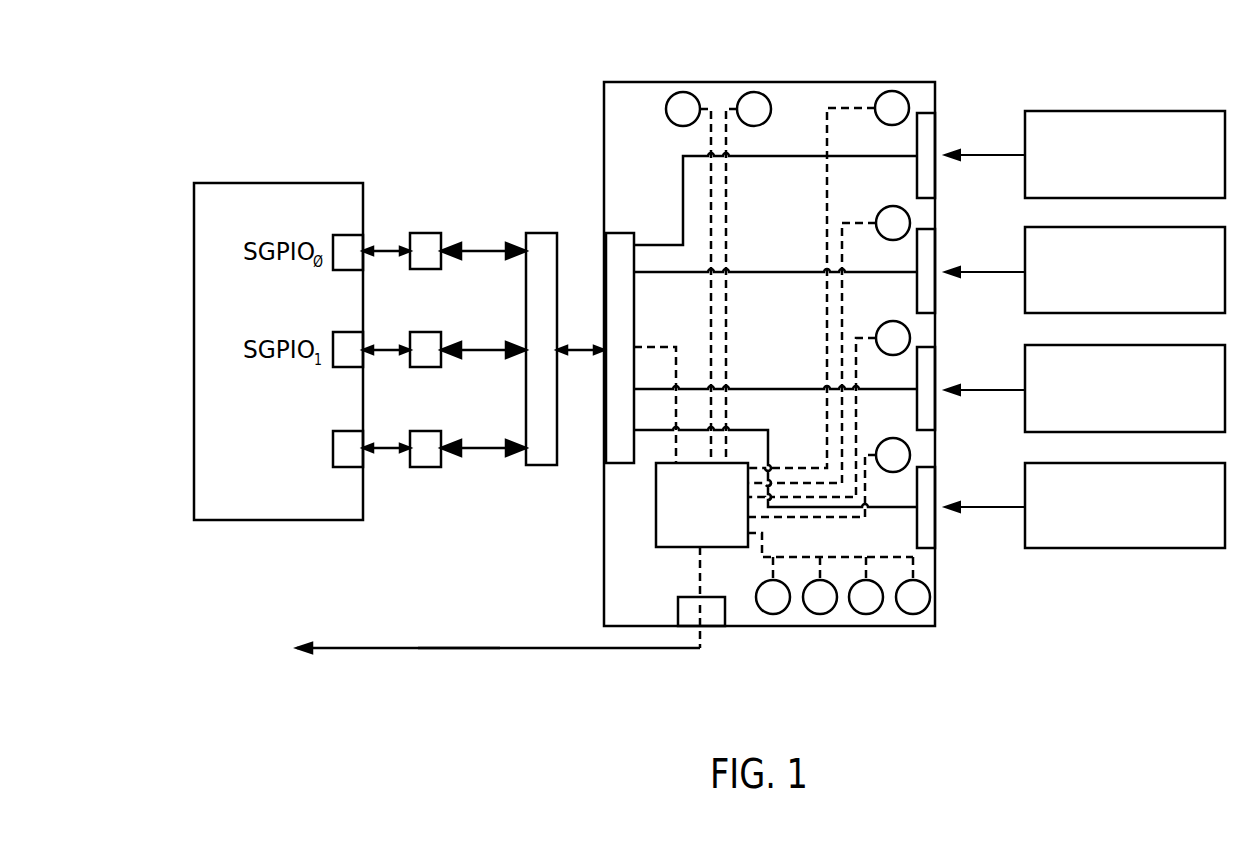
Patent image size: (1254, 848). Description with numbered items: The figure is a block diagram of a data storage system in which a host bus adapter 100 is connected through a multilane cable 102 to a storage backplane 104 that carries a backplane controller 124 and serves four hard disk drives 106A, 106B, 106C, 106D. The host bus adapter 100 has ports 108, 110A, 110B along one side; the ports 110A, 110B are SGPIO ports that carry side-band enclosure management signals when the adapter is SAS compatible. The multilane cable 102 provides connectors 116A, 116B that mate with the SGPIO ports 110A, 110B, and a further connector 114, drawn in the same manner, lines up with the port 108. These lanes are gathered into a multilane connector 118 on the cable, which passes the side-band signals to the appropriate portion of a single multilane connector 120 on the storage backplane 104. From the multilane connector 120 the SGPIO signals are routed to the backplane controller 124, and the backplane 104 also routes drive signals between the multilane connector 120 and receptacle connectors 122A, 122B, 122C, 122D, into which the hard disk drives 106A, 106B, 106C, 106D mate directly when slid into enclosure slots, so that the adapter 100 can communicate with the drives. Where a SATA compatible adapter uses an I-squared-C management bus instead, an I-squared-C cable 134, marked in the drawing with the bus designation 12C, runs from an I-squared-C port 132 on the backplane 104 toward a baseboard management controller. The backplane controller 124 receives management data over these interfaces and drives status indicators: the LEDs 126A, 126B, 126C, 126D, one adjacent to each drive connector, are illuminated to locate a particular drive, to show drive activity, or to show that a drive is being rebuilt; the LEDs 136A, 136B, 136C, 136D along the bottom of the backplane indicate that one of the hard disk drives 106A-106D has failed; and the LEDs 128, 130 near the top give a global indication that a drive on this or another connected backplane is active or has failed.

The host bus adapter (HBA) 100 is at (273, 479).
The multilane cable 102 is at (506, 200).
The storage backplane 104 is at (644, 115).
The hard disk drive 106A is at (1150, 179).
The hard disk drive 106B is at (1150, 295).
The hard disk drive 106C is at (1150, 413).
The hard disk drive 106D is at (1150, 530).
The port 108 is at (346, 431).
The SGPIO port 110A is at (346, 235).
The SGPIO port 110B is at (346, 332).
The connector 114 is at (424, 431).
The connector 116A is at (424, 233).
The connector 116B is at (424, 332).
The multilane connector 118 is at (541, 465).
The multilane connector 120 is at (622, 463).
The connector 122A is at (938, 128).
The connector 122B is at (938, 249).
The connector 122C is at (938, 364).
The connector 122D is at (938, 481).
The backplane controller 124 is at (719, 518).
The LED 126A is at (892, 126).
The LED 126B is at (890, 207).
The LED 126C is at (890, 321).
The LED 126D is at (890, 438).
The LED 128 is at (680, 90).
The LED 130 is at (750, 90).
The I2C port 132 is at (711, 624).
The I2C cable 134 is at (538, 650).
The I2C bus 12C is at (459, 665).
The LED 136A is at (762, 614).
The LED 136B is at (811, 614).
The LED 136C is at (857, 614).
The LED 136D is at (908, 614).